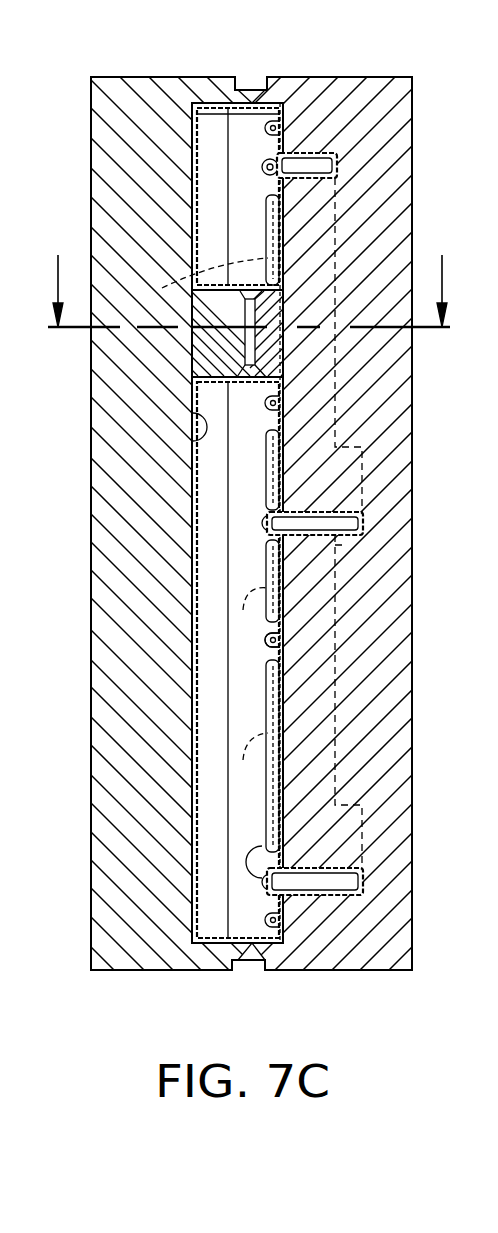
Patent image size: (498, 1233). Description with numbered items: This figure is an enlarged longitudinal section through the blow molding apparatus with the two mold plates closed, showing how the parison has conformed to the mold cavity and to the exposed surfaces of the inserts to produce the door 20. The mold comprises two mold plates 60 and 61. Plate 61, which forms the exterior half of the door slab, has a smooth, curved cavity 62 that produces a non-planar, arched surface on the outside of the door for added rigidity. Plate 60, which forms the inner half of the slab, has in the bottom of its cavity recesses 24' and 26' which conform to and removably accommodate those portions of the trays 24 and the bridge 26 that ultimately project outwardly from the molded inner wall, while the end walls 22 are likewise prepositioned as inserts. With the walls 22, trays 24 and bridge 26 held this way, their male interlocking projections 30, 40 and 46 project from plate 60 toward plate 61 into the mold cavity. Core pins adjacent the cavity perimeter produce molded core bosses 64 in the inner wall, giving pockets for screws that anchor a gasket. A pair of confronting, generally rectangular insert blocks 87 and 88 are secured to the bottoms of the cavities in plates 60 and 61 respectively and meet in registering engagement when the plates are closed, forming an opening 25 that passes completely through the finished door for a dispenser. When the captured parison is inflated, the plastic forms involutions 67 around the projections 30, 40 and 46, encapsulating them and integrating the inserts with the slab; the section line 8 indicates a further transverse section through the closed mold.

The door 20 is at (178, 930).
The end walls 22 is at (337, 717).
The trays 24 is at (366, 770).
The recesses 24' is at (371, 698).
The opening 25 is at (195, 378).
The bridge 26 is at (377, 186).
The recesses 26' is at (383, 144).
The male interlocking projections 30 is at (193, 523).
The male interlocking projections 40 is at (266, 520).
The male interlocking projections 46 is at (270, 185).
The mold plate 60 is at (336, 78).
The mold plate 61 is at (160, 78).
The cavity 62 is at (195, 441).
The core bosses 64 is at (266, 638).
The involutions 67 is at (267, 170).
The insert block 87 is at (275, 347).
The insert block 88 is at (200, 343).
The section line 8- 8 is at (249, 275).